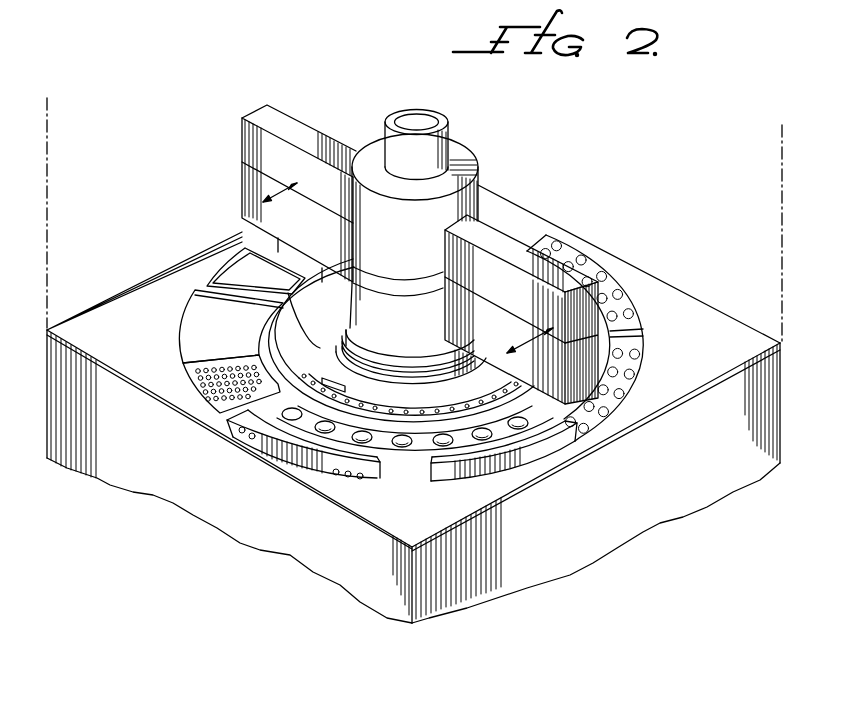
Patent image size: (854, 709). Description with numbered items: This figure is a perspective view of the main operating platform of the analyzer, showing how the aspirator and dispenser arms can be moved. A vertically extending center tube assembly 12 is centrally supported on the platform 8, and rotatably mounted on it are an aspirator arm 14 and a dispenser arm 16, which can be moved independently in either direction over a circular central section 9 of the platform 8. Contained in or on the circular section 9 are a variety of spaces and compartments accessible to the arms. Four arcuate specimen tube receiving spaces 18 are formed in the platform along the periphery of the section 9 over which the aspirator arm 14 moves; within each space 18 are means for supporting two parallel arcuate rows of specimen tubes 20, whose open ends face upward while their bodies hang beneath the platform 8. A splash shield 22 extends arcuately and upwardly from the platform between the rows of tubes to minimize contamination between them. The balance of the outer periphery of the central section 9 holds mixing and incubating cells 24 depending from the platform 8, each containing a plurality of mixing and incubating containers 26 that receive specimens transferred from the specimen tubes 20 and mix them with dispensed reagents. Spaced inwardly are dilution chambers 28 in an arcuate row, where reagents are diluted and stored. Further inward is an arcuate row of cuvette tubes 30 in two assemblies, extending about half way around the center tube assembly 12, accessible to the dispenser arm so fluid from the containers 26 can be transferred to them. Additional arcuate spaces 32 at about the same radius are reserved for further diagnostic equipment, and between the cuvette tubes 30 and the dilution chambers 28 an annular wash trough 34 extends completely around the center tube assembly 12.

The platform 8 is at (104, 316).
The circular central section 9 is at (232, 259).
The center tube assembly 12 is at (490, 161).
The aspirator arm 14 is at (512, 247).
The dispenser arm 16 is at (308, 133).
The arcuate specimen tube receiving spaces 18 is at (405, 478).
The specimen tubes 20 is at (643, 355).
The splash shield 22 is at (436, 470).
The mixing and incubating cells 24 is at (207, 389).
The mixing and incubating containers 26 is at (212, 400).
The dilution chambers 28 is at (352, 432).
The cuvette tubes 30 is at (340, 380).
The additional arcuate spaces 32 is at (302, 332).
The annular wash trough 34 is at (225, 299).